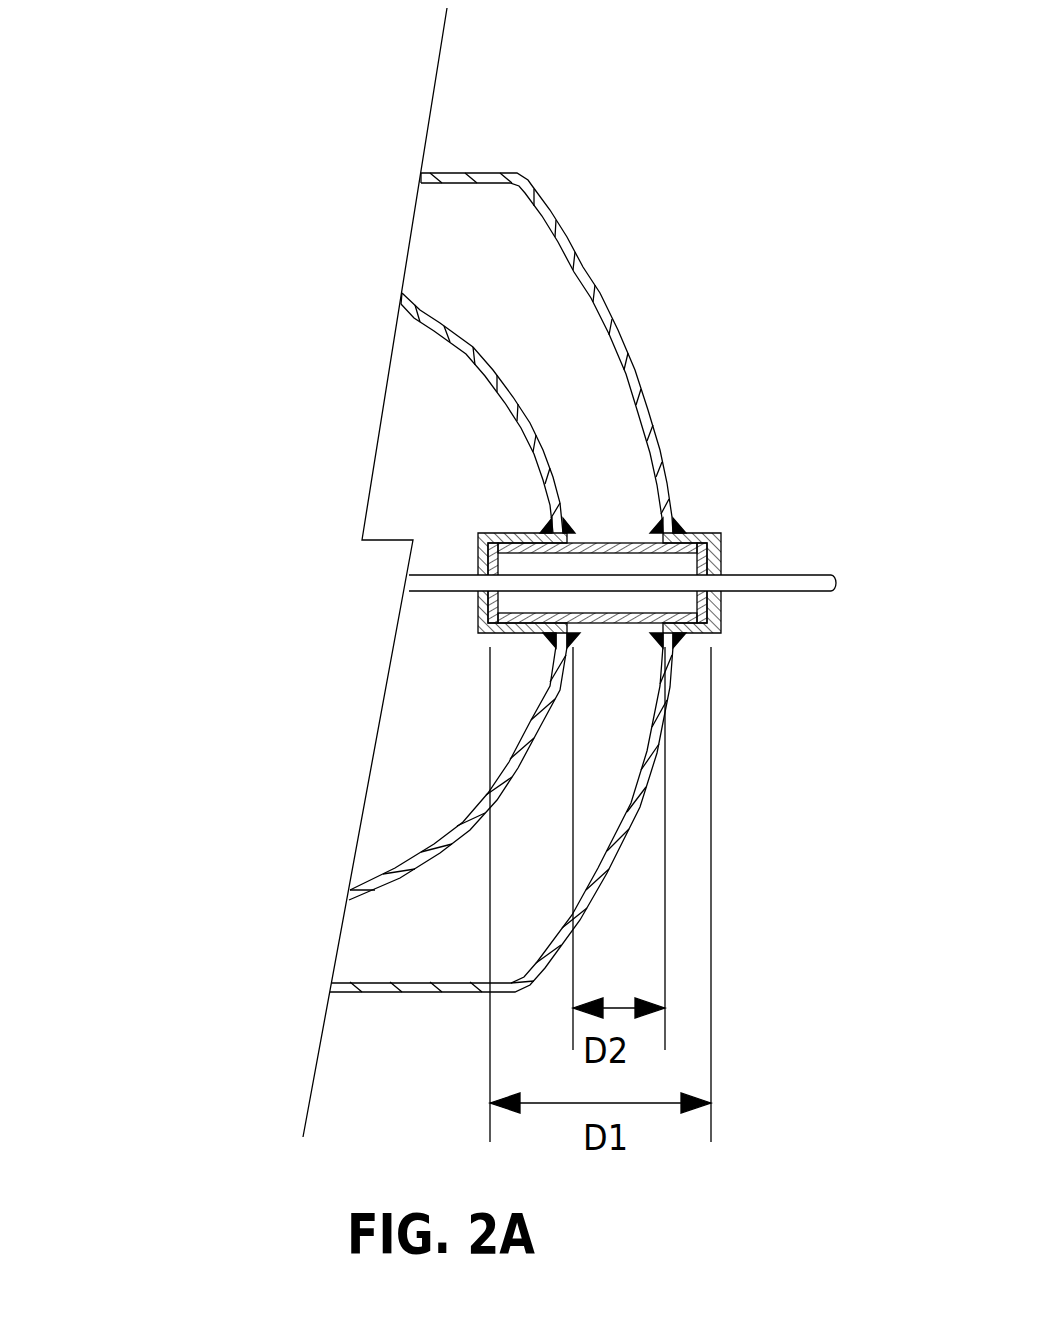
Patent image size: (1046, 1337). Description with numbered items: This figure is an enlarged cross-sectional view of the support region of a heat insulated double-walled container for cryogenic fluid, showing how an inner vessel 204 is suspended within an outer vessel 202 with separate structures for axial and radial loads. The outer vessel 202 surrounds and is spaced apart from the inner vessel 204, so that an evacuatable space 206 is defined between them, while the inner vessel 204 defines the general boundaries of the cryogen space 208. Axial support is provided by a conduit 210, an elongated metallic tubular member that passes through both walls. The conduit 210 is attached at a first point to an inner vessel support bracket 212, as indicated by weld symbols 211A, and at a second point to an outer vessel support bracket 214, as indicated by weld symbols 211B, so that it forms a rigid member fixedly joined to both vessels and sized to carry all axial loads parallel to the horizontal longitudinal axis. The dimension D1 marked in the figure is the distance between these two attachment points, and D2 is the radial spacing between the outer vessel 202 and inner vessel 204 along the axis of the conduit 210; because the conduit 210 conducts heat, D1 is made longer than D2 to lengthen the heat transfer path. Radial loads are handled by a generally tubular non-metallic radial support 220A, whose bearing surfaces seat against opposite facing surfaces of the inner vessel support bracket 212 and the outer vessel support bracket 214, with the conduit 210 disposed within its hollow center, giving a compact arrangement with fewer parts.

The outer vessel 202 is at (500, 172).
The inner vessel 204 is at (465, 340).
The evacuatable space 206 is at (518, 288).
The cryogen space 208 is at (455, 483).
The conduit 210 is at (768, 582).
The weld symbols 211A is at (477, 567).
The weld symbols 211B is at (723, 562).
The inner vessel support bracket 212 is at (553, 540).
The outer vessel support bracket 214 is at (721, 533).
The non-metallic radial support 220A is at (603, 547).